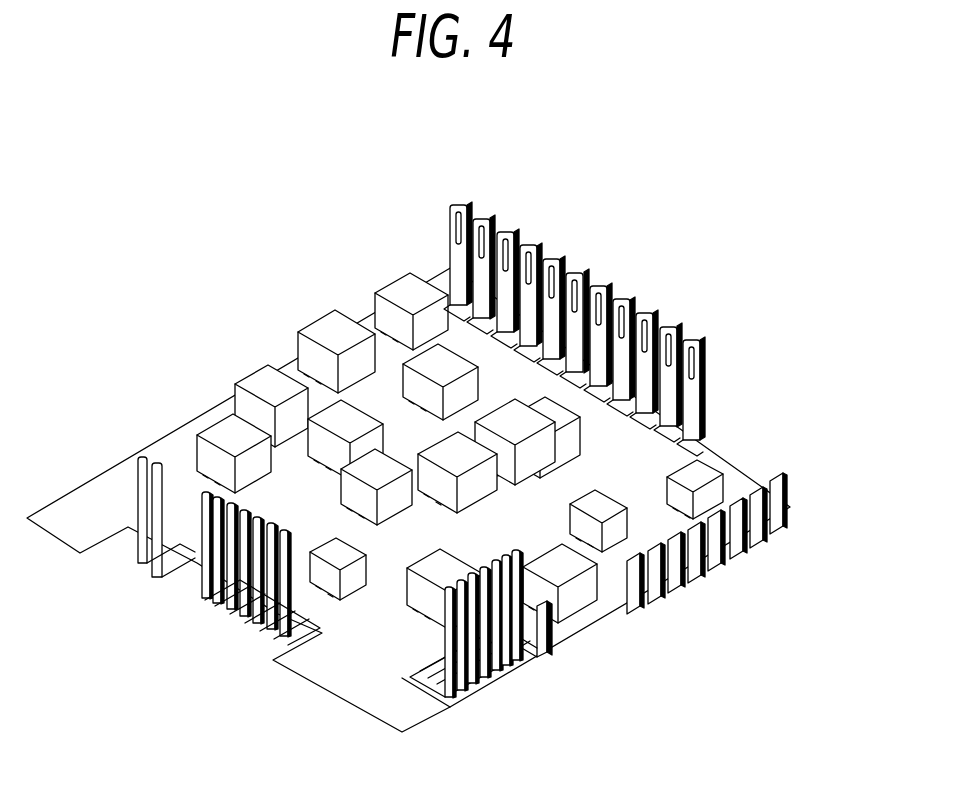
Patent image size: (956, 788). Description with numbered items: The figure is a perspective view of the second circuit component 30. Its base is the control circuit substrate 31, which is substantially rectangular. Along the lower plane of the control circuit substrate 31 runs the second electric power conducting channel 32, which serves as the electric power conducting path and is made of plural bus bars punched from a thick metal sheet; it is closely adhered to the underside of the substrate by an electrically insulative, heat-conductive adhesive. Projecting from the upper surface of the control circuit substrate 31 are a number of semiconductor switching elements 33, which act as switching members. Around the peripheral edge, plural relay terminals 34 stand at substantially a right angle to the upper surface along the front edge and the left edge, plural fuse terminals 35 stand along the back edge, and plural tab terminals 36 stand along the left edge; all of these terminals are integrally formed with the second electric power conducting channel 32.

The second circuit component 30 is at (438, 444).
The control circuit substrate 31 is at (652, 474).
The second electric power conducting channel 32 is at (657, 603).
The semiconductor switching element 33 is at (258, 378).
The relay terminal 34 is at (142, 480).
The fuse terminals 35 is at (627, 303).
The tab terminals 36 is at (787, 490).